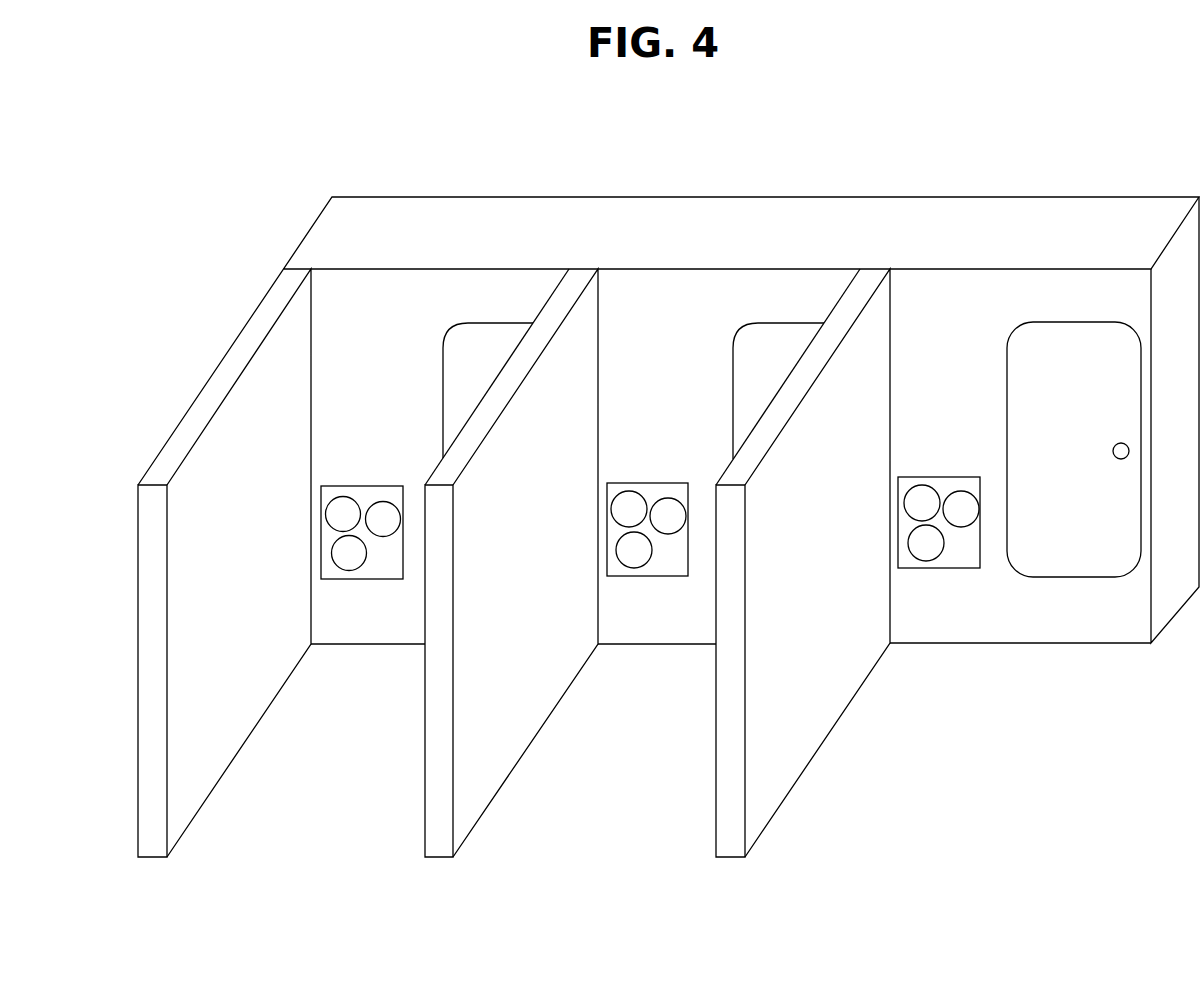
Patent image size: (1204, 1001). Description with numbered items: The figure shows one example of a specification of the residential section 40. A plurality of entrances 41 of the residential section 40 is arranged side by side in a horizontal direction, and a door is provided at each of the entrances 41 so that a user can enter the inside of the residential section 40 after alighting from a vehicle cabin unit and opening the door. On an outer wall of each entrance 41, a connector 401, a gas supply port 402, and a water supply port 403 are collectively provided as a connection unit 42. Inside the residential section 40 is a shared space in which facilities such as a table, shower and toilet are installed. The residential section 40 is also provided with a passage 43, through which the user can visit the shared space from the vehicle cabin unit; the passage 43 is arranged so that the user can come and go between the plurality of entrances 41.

The residential section 40 is at (260, 258).
The entrance 41 is at (327, 745).
The connection unit 42 is at (967, 568).
The passage 43 is at (493, 210).
The connector 401 is at (923, 506).
The gas supply port 402 is at (966, 510).
The water supply port 403 is at (926, 550).